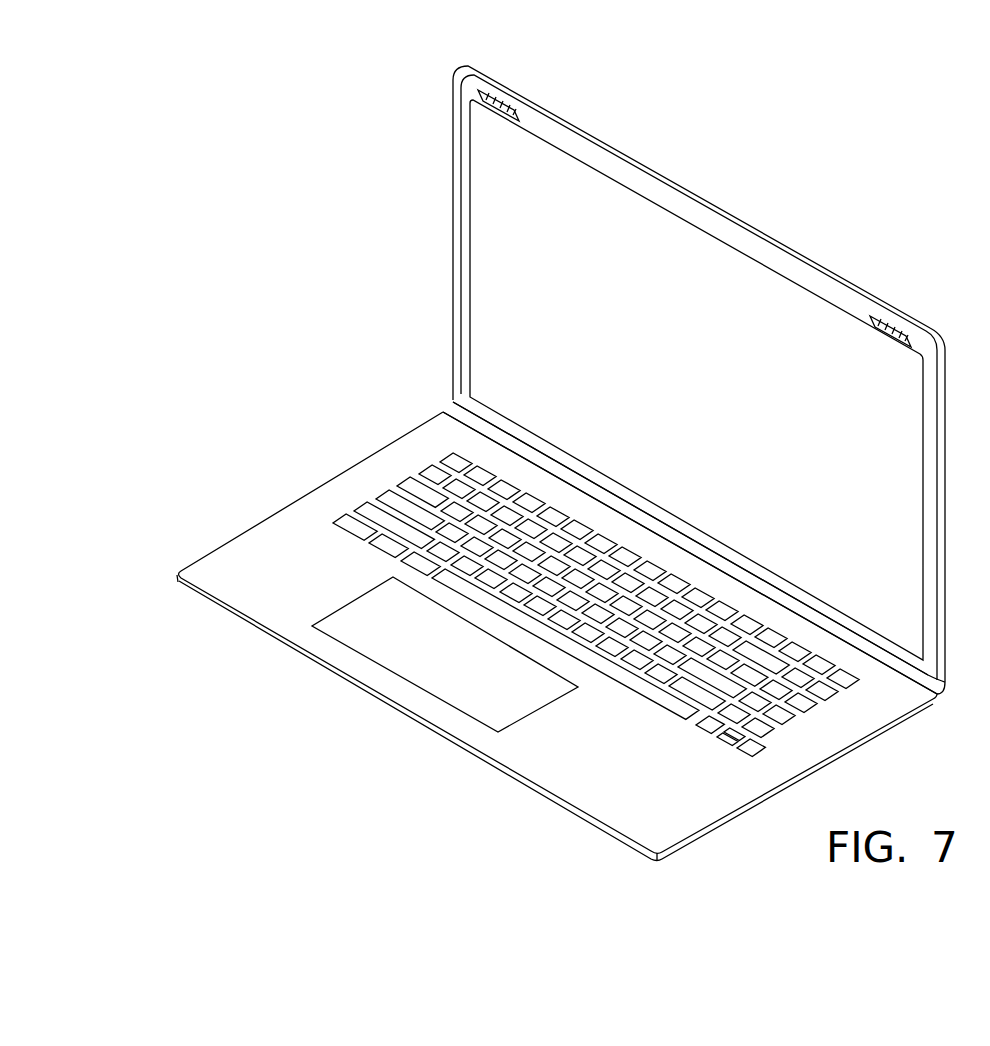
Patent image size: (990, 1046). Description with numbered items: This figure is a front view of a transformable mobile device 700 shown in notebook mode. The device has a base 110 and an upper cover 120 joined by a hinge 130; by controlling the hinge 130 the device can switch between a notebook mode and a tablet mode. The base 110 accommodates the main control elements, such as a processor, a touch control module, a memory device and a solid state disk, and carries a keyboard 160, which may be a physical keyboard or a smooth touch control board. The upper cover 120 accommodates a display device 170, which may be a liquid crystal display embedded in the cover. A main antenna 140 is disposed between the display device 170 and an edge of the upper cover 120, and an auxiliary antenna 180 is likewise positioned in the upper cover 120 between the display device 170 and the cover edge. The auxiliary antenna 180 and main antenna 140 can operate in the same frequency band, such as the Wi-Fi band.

The transformable mobile device 700 is at (109, 84).
The base 110 is at (318, 487).
The upper cover 120 is at (453, 240).
The hinge 130 is at (455, 418).
The main antenna 140 is at (873, 319).
The keyboard 160 is at (405, 478).
The display device 170 is at (467, 167).
The auxiliary antenna 180 is at (498, 100).